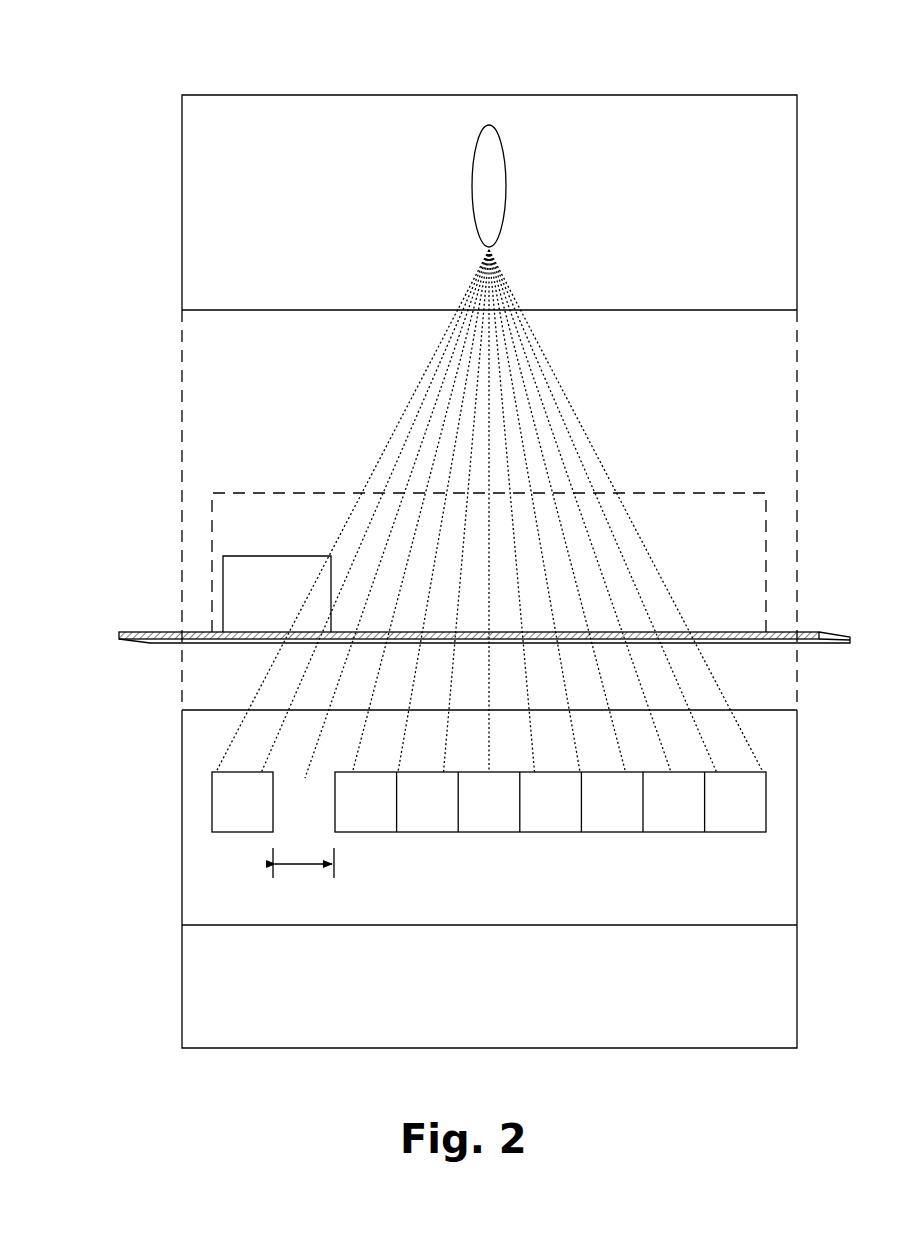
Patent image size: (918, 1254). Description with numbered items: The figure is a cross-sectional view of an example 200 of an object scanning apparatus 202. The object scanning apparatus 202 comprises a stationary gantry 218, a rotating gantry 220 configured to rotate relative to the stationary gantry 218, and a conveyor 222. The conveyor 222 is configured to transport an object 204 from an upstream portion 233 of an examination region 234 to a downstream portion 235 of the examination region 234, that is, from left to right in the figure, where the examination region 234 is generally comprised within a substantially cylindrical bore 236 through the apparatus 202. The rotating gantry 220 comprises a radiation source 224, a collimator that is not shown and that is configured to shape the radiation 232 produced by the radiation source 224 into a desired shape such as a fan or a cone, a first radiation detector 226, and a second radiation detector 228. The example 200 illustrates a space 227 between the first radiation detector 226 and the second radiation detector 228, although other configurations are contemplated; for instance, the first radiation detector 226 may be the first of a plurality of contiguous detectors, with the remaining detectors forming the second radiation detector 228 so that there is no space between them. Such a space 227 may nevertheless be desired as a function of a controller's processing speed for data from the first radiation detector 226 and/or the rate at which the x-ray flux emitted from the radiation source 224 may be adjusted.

The example 200 is at (147, 62).
The object scanning apparatus 202 is at (182, 158).
The object 204 is at (223, 556).
The stationary gantry 218 is at (506, 996).
The rotating gantry 220 is at (630, 210).
The conveyor 222 is at (119, 632).
The radiation source 224 is at (476, 158).
The first radiation detector 226 is at (243, 833).
The space 227 is at (302, 865).
The second radiation detector 228 is at (551, 833).
The radiation 232 is at (474, 278).
The upstream portion 233 is at (265, 452).
The examination region 234 is at (212, 493).
The downstream portion 235 is at (706, 452).
The substantially cylindrical bore 236 is at (352, 428).